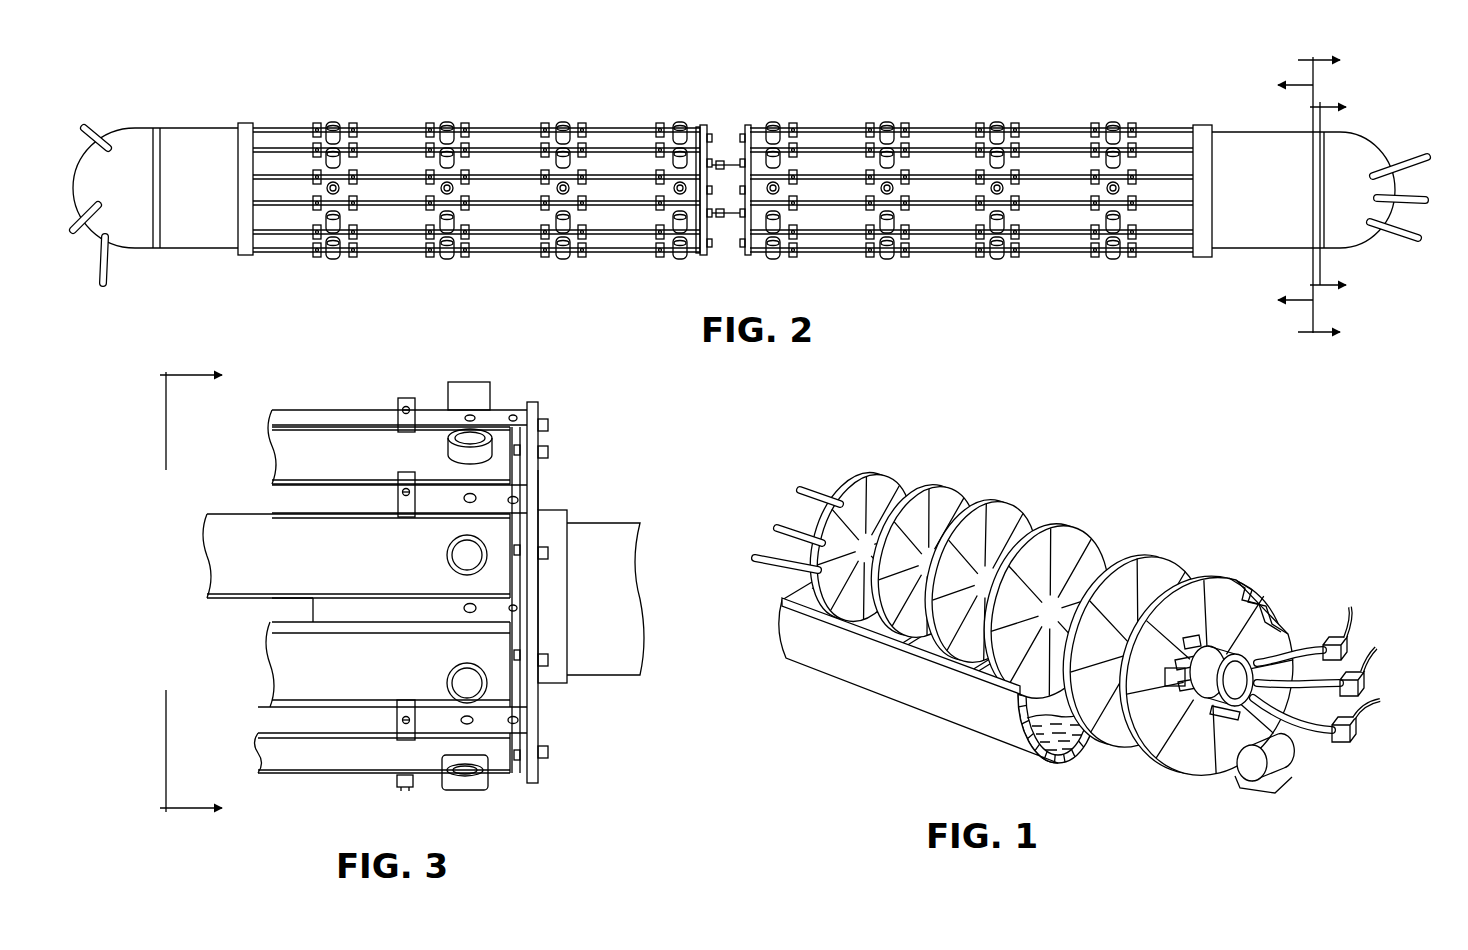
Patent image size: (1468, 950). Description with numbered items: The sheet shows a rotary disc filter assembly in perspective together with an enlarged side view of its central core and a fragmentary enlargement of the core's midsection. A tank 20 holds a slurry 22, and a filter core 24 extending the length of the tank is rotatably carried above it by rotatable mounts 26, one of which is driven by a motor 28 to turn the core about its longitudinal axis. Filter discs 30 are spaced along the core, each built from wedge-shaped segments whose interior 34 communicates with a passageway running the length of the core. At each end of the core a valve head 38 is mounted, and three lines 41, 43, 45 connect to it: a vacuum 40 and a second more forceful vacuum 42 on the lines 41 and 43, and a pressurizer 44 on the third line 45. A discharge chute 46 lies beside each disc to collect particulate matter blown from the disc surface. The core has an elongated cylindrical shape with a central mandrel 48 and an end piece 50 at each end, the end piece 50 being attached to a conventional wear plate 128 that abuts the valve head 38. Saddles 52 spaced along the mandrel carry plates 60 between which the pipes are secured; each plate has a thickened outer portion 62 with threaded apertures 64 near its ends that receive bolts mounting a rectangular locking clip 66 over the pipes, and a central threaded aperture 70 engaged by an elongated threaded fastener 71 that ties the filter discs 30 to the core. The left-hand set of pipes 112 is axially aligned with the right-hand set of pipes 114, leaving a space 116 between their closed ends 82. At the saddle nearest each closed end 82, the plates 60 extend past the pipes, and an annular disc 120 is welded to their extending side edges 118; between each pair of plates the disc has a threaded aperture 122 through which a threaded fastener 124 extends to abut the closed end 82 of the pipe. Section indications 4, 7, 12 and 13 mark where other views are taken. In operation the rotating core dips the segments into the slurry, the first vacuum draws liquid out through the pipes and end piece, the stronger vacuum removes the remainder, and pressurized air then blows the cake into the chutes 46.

In FIG. 1, the tank 20 is at (992, 737).
In FIG. 1, the slurry 22 is at (1022, 712).
In FIG. 2, the filter core 24 is at (1047, 126).
In FIG. 1, the filter core 24 is at (1133, 538).
In FIG. 1, the rotatable mounts 26 is at (1225, 716).
In FIG. 1, the motor 28 is at (1277, 768).
In FIG. 1, the filter discs 30 is at (1051, 611).
In FIG. 1, the interior 34 is at (1214, 582).
In FIG. 2, the valve head 38 is at (133, 140).
In FIG. 1, the valve head 38 is at (1247, 664).
In FIG. 1, the vacuum 40 is at (1357, 733).
In FIG. 2, the line 41 is at (110, 282).
In FIG. 1, the line 41 is at (770, 568).
In FIG. 1, the second vacuum 42 is at (1366, 686).
In FIG. 2, the line 43 is at (98, 212).
In FIG. 1, the line 43 is at (790, 536).
In FIG. 1, the pressurizer 44 is at (1348, 645).
In FIG. 2, the line 45 is at (97, 128).
In FIG. 1, the line 45 is at (815, 492).
In FIG. 1, the discharge chute 46 is at (862, 622).
In FIG. 2, the central mandrel 48 is at (722, 163).
In FIG. 2, the end piece 50 is at (212, 250).
In FIG. 2, the securing means (saddle) 52 is at (468, 126).
In FIG. 3, the securing means (saddle) 52 is at (538, 399).
In FIG. 3, the plates 60 is at (524, 528).
In FIG. 3, the thickened outer portion 62 is at (440, 505).
In FIG. 3, the threaded apertures 64 is at (519, 499).
In FIG. 3, the locking clip 66 is at (403, 400).
In FIG. 3, the threaded aperture 70 is at (463, 496).
In FIG. 1, the threaded aperture 70 is at (1190, 647).
In FIG. 1, the elongated threaded fastener 71 is at (1176, 664).
In FIG. 2, the closed end 82 is at (703, 124).
In FIG. 3, the closed end 82 is at (530, 585).
In FIG. 2, the left-hand set of pipes 112 is at (522, 114).
In FIG. 2, the right-hand set of pipes 114 is at (836, 126).
In FIG. 2, the space 116 is at (733, 122).
In FIG. 3, the extending side edge 118 is at (540, 415).
In FIG. 3, the annular disc 120 is at (540, 466).
In FIG. 3, the threaded aperture 122 is at (520, 556).
In FIG. 3, the threaded fastener 124 is at (549, 452).
In FIG. 2, the wear plate 128 is at (157, 250).
In FIG. 3, the section line 4 is at (201, 592).
In FIG. 2, the section line 7 is at (1283, 193).
In FIG. 2, the left-hand set of pipes 12 is at (1332, 196).
In FIG. 2, the section line 13 is at (1342, 197).